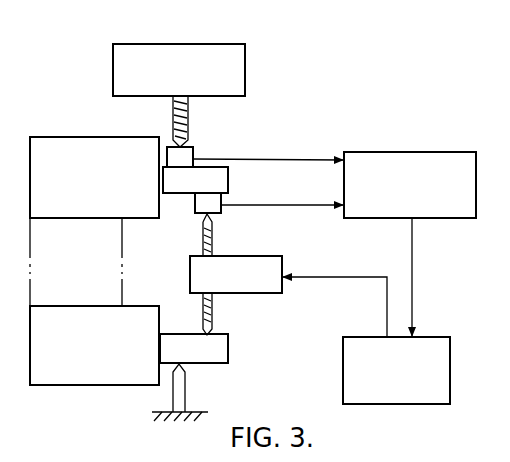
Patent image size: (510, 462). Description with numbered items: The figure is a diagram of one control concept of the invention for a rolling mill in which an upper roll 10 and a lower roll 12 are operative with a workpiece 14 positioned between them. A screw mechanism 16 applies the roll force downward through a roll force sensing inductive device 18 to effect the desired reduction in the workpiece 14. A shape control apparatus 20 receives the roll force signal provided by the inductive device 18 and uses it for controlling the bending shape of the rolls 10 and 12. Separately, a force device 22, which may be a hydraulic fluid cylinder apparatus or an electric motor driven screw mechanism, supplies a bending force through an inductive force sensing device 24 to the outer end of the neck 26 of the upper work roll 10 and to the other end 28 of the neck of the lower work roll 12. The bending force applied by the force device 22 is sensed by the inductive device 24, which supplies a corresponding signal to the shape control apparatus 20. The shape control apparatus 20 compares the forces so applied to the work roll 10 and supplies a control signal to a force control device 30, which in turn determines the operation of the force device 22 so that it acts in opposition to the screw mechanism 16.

The upper roll 10 is at (118, 137).
The lower roll 12 is at (118, 384).
The workpiece 14 is at (122, 243).
The screw mechanism 16 is at (137, 44).
The roll force sensing inductive device 18 is at (193, 149).
The shape control apparatus 20 is at (375, 152).
The force device 22 is at (268, 256).
The inductive force sensing device 24 is at (222, 205).
The neck of the work roll 26 is at (191, 187).
The other end of the neck 28 is at (222, 338).
The force control device 30 is at (431, 337).